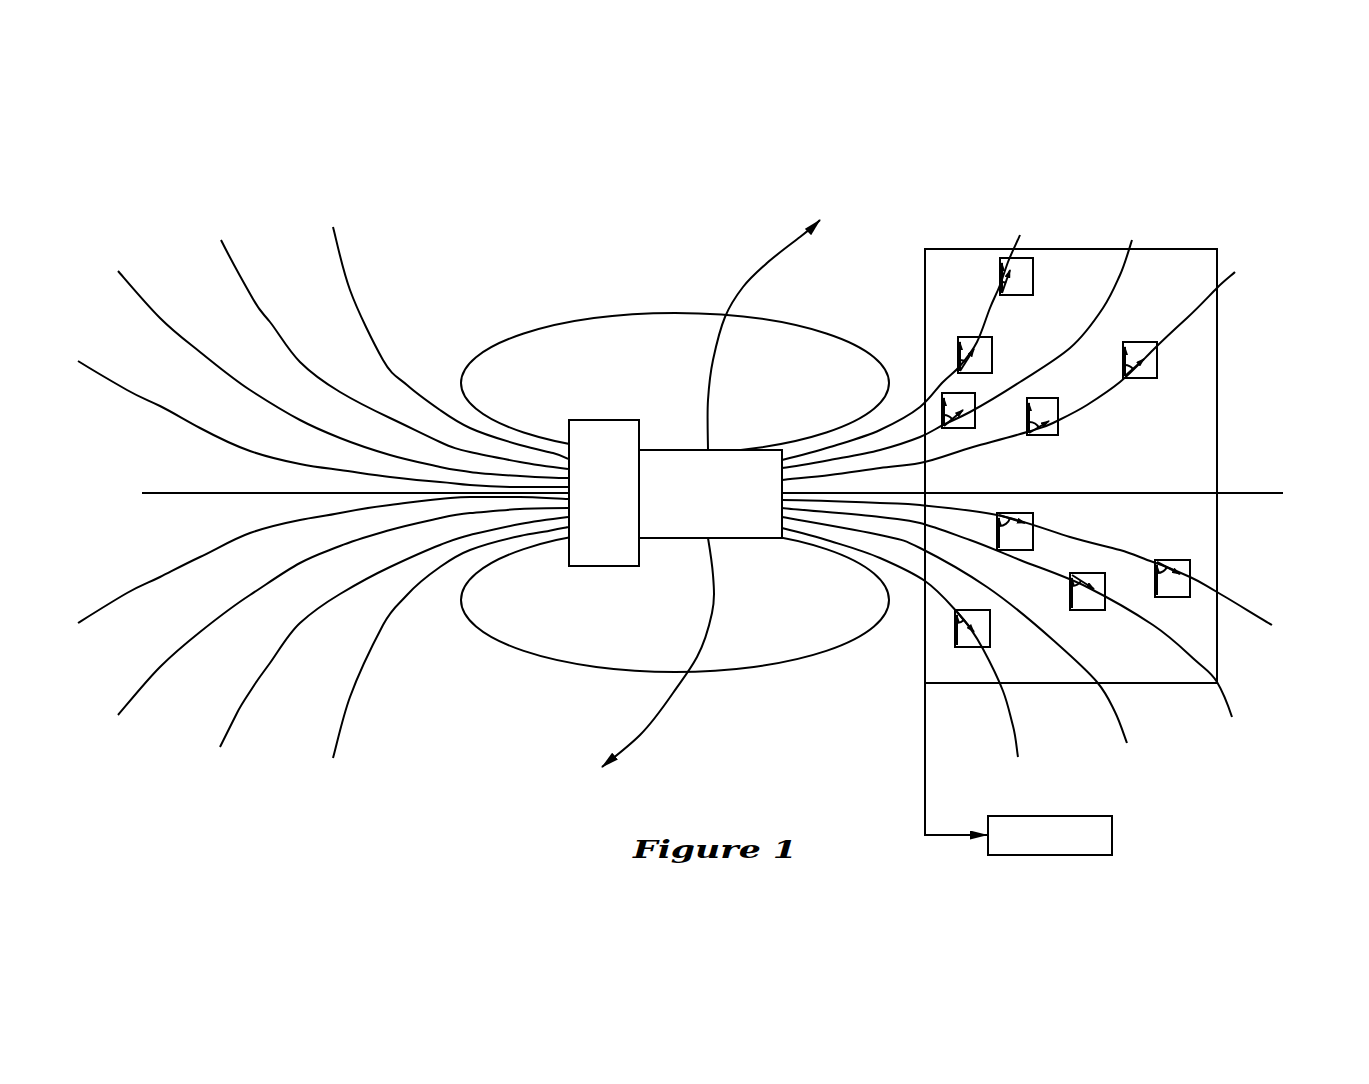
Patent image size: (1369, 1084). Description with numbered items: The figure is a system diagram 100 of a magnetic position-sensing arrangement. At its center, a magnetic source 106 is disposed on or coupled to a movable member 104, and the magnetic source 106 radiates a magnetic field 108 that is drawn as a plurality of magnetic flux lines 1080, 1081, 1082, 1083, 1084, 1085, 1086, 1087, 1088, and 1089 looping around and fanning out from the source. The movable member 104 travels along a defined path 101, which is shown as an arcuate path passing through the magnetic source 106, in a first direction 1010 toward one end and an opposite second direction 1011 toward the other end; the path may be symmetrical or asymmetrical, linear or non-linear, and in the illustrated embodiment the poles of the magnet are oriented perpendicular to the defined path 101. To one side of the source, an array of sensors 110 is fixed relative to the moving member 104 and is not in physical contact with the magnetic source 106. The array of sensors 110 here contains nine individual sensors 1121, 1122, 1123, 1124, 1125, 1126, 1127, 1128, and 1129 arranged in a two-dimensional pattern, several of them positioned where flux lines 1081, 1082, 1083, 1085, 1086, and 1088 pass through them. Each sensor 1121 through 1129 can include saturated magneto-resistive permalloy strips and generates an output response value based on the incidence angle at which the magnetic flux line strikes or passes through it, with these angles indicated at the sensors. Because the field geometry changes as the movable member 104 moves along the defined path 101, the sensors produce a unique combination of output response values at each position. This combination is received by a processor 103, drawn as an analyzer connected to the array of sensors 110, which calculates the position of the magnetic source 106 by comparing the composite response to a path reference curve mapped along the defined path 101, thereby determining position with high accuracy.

The system diagram 100 is at (898, 182).
The defined path 101 is at (711, 505).
The first direction 1010 is at (620, 758).
The second direction 1011 is at (786, 248).
The processor 103 is at (1033, 855).
The movable member 104 is at (603, 420).
The magnetic source 106 is at (662, 448).
The magnetic field 108 is at (180, 240).
The magnetic flux line 1080 is at (817, 335).
The magnetic flux line 1081 is at (1014, 236).
The magnetic flux line 1082 is at (1135, 245).
The magnetic flux line 1083 is at (1223, 282).
The magnetic flux line 1084 is at (1264, 493).
The magnetic flux line 1085 is at (1243, 601).
The magnetic flux line 1086 is at (1226, 702).
The magnetic flux line 1087 is at (1132, 748).
The magnetic flux line 1088 is at (1020, 758).
The magnetic flux line 1089 is at (785, 668).
The array of sensors 110 is at (1242, 410).
The sensor 1121 is at (990, 637).
The sensor 1122 is at (1106, 588).
The sensor 1123 is at (1034, 523).
The sensor 1124 is at (1184, 562).
The sensor 1125 is at (975, 427).
The sensor 1126 is at (990, 352).
The sensor 1127 is at (1034, 262).
The sensor 1128 is at (1147, 378).
The sensor 1129 is at (1060, 428).